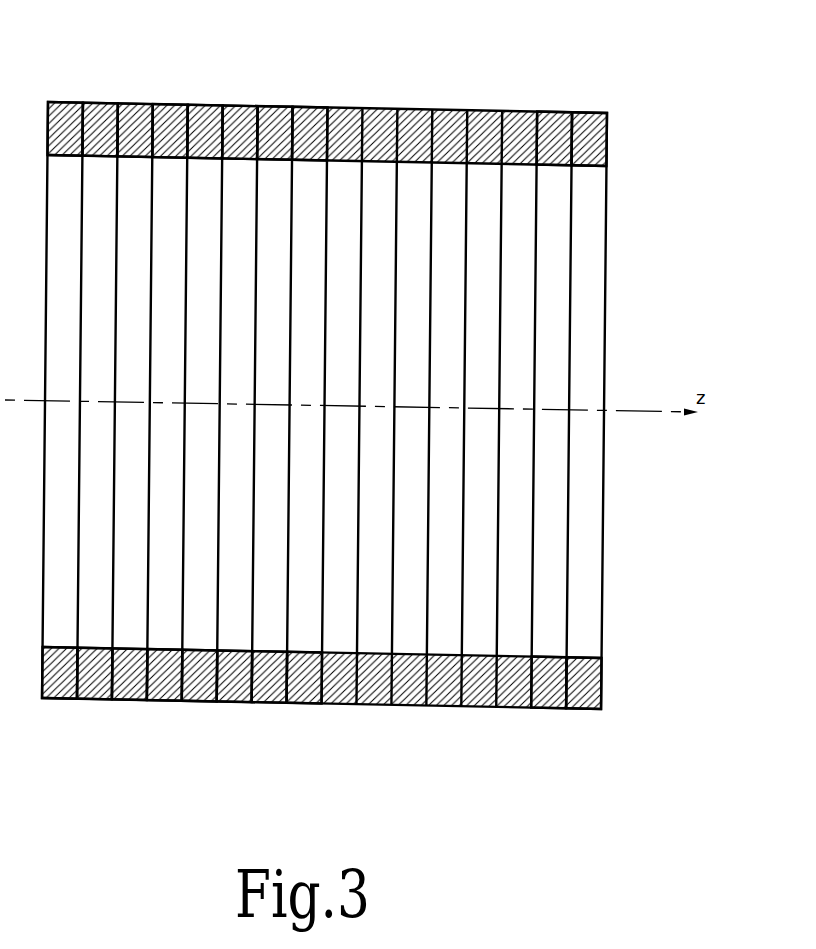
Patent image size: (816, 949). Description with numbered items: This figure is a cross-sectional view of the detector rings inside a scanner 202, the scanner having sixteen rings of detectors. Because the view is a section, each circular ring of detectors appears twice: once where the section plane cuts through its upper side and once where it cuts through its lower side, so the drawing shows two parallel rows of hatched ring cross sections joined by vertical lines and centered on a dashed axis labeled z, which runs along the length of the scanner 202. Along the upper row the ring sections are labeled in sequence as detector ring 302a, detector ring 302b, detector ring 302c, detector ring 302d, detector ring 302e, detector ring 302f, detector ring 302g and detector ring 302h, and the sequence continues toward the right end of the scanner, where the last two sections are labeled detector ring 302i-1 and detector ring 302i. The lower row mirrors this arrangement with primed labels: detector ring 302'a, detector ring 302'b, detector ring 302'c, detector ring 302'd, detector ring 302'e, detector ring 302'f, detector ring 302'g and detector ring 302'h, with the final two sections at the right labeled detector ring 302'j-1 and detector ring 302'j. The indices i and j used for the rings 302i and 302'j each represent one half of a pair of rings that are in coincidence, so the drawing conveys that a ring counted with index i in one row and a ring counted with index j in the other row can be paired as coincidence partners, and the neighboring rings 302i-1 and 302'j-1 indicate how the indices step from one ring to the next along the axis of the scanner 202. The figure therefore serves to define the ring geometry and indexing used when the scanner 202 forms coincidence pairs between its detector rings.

The scanner 202 is at (603, 332).
The detector ring 302a is at (70, 102).
The detector ring 302b is at (100, 102).
The detector ring 302c is at (138, 103).
The detector ring 302d is at (170, 103).
The detector ring 302e is at (208, 104).
The detector ring 302f is at (238, 105).
The detector ring 302g is at (280, 106).
The detector ring 302h is at (312, 106).
The detector ring 302i-1 is at (558, 113).
The detector ring 302i is at (588, 113).
The detector ring 302'a is at (50, 701).
The detector ring 302'b is at (94, 719).
The detector ring 302'c is at (120, 701).
The detector ring 302'd is at (165, 719).
The detector ring 302'e is at (190, 702).
The detector ring 302'f is at (236, 720).
The detector ring 302'g is at (259, 703).
The detector ring 302'h is at (303, 721).
The detector ring 302'j-1 is at (532, 709).
The detector ring 302'j is at (587, 728).